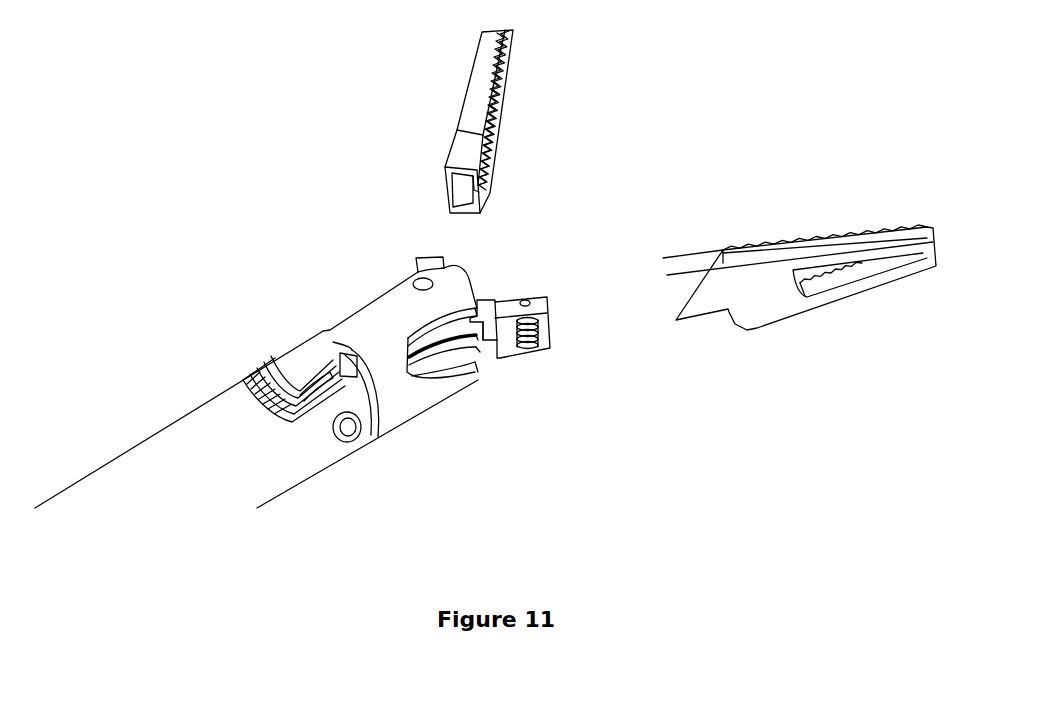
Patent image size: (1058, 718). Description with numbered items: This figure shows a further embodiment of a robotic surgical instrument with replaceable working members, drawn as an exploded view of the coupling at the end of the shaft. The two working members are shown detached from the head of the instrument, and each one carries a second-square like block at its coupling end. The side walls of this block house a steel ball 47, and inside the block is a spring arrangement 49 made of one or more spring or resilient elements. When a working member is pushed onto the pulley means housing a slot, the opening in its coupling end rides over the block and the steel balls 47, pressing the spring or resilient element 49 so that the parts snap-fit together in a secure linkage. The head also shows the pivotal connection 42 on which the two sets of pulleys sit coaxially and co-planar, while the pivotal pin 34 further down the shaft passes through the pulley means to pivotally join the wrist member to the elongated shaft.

The pivotal connection 42 is at (414, 281).
The steel ball 47 is at (525, 304).
The spring arrangement 49 is at (523, 343).
The pivotal pin 34 is at (348, 427).